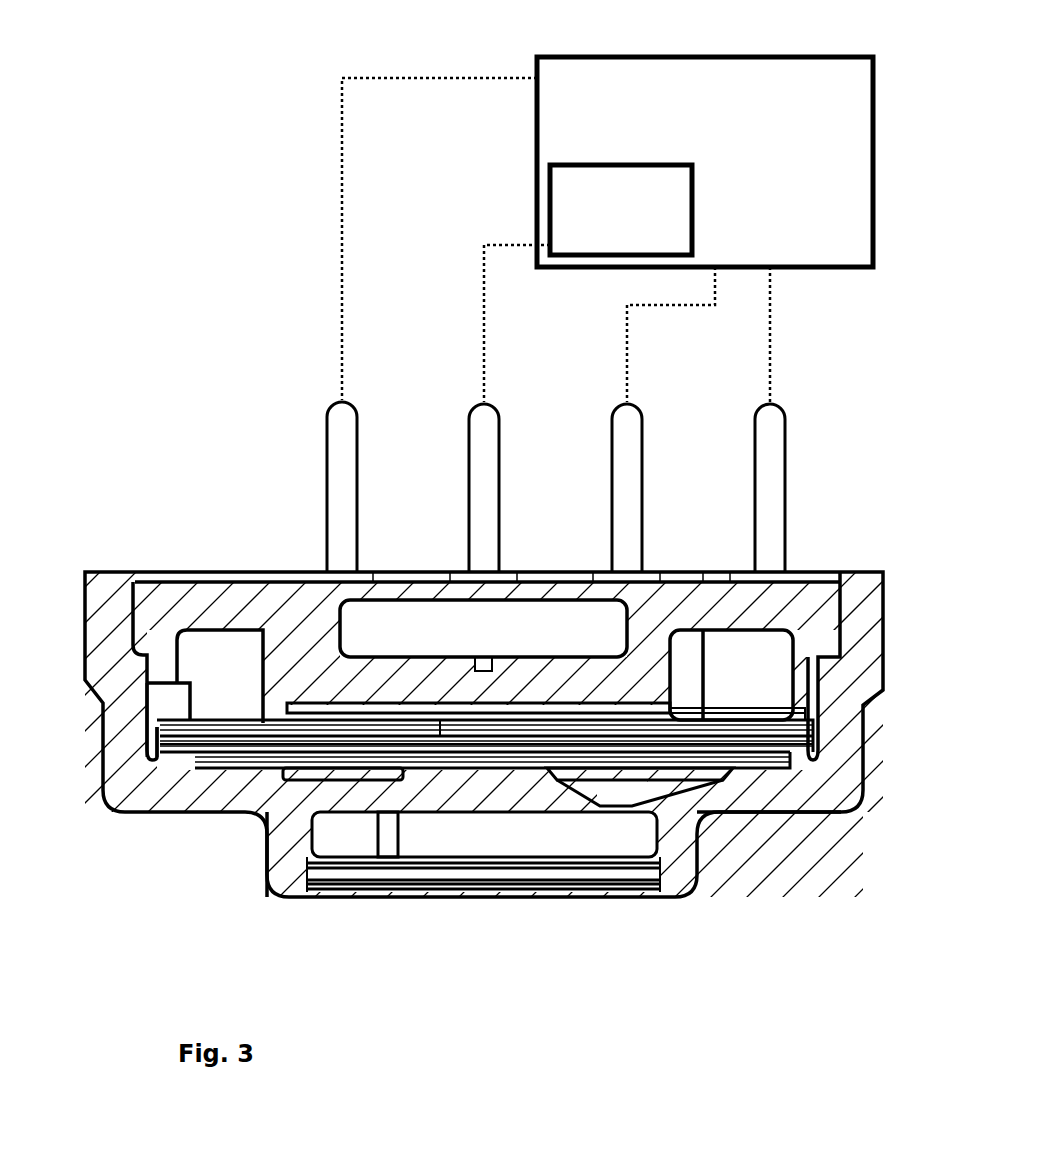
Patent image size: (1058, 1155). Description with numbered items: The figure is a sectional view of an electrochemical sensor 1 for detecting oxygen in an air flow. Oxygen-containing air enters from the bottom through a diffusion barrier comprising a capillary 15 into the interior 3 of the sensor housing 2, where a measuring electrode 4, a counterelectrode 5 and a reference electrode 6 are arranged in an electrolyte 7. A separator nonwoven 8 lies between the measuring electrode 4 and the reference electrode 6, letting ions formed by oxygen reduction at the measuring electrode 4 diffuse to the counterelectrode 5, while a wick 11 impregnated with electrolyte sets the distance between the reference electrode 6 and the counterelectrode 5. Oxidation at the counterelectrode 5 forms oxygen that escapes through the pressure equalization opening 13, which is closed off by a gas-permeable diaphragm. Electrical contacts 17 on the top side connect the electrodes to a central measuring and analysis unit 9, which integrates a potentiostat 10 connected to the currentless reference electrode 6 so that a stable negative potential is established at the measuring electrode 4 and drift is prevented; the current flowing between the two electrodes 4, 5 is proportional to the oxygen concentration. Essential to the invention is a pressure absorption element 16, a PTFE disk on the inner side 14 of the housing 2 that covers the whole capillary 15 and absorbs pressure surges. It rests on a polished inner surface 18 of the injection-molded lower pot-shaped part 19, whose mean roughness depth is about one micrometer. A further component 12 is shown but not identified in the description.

The electrochemical sensor 1 is at (190, 372).
The sensor housing 2 is at (162, 598).
The interior 3 is at (165, 705).
The measuring electrode 4 is at (245, 752).
The counterelectrode 5 is at (360, 713).
The reference electrode 6 is at (250, 720).
The electrolyte 7 is at (468, 742).
The separator nonwoven 8 is at (233, 747).
The measuring and analysis unit 9 is at (757, 85).
The potentiostat 10 is at (621, 210).
The wick 11 is at (488, 742).
The cover layer 12 is at (317, 723).
The pressure equalization opening 13 is at (483, 668).
The inner side 14 is at (150, 692).
The capillary 15 is at (340, 782).
The pressure absorption element 16 is at (297, 775).
The electrical contacts 17 is at (480, 452).
The inner surface 18 is at (408, 750).
The lower pot-shaped part 19 is at (715, 795).